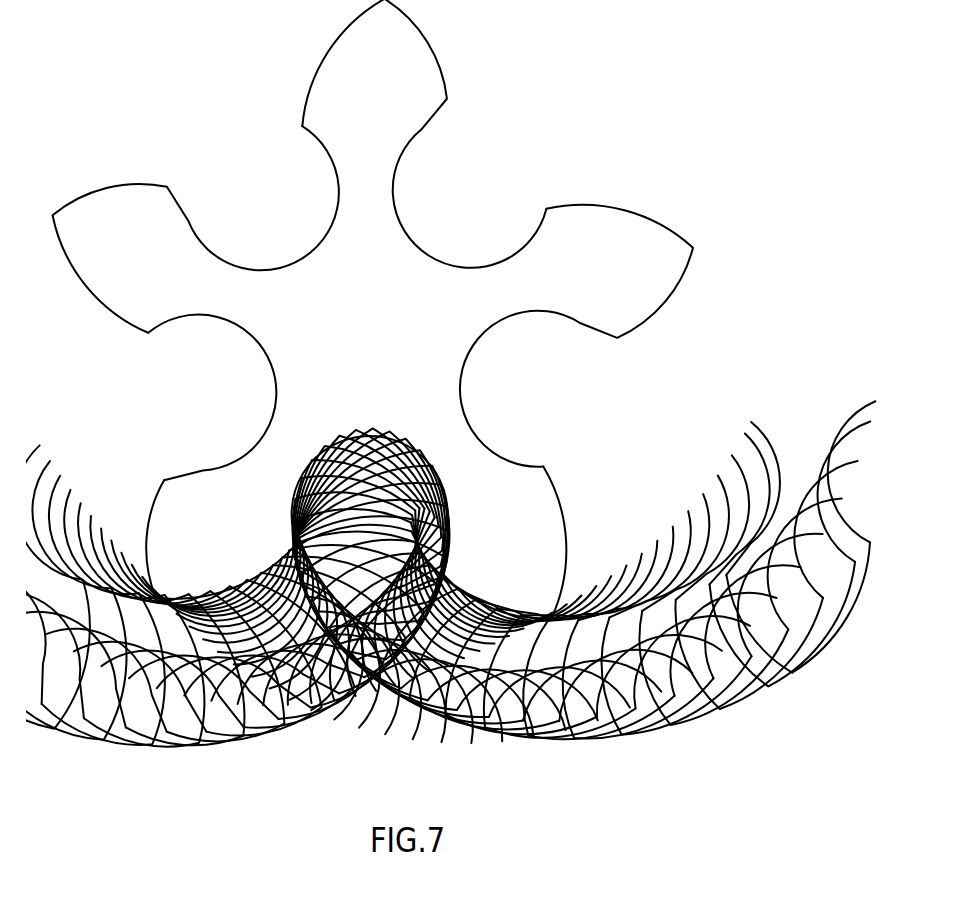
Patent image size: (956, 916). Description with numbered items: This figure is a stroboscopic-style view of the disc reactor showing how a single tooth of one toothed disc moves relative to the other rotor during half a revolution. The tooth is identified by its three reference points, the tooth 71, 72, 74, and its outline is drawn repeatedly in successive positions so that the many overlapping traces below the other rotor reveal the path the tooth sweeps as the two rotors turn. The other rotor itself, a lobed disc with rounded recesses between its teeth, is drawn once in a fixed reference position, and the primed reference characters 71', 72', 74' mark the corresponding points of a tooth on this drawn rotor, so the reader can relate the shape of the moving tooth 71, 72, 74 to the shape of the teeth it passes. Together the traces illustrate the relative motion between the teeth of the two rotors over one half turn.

The tooth 71 is at (759, 642).
The tooth 72 is at (864, 539).
The tooth 74 is at (753, 513).
The tooth tip corner of rotor lobe 71' is at (416, 410).
The tooth root corner of rotor lobe 72' is at (362, 403).
The flank cusp of rotor lobe 74' is at (359, 393).